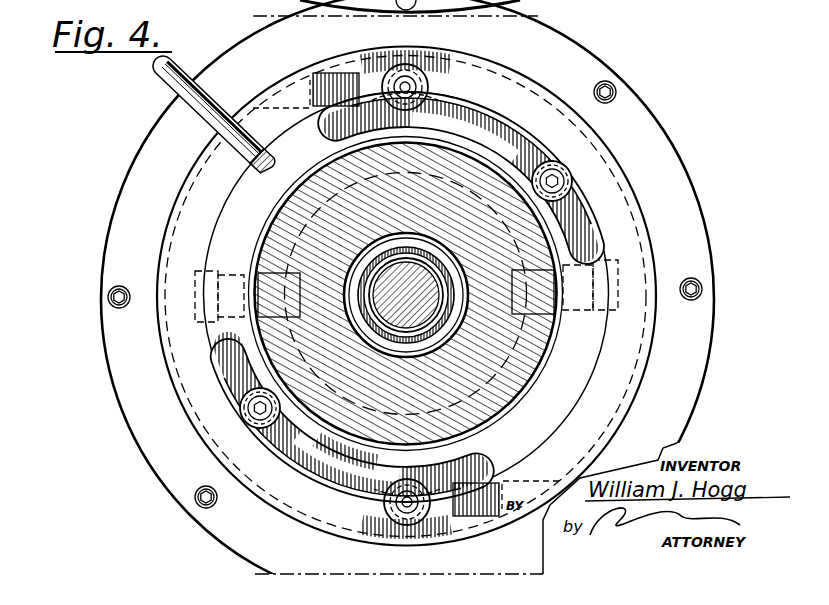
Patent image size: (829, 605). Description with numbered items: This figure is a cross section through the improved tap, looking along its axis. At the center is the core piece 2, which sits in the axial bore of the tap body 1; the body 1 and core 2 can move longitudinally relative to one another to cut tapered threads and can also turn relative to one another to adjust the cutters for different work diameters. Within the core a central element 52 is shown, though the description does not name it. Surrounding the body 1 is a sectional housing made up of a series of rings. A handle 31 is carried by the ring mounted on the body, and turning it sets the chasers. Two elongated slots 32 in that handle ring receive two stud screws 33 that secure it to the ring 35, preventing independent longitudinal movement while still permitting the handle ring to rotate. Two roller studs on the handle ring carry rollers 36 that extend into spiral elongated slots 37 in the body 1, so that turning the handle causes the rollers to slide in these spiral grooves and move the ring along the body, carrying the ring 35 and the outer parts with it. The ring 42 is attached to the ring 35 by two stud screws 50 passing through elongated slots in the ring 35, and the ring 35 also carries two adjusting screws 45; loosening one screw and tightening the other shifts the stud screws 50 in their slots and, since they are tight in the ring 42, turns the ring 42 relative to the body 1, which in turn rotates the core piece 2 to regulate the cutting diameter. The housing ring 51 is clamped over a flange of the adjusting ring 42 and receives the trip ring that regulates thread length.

The body 1 is at (513, 397).
The core piece 2 is at (406, 295).
The handle 31 is at (175, 79).
The elongated slot 32 is at (573, 207).
The stud screw 33 is at (556, 179).
The ring 35 is at (730, 383).
The roller 36 is at (263, 263).
The spiral elongated slot 37 is at (470, 184).
The ring 42 is at (432, 80).
The adjusting screw 45 is at (321, 79).
The stud screw 50 is at (283, 127).
The housing ring 51 is at (673, 185).
The shaft 52 is at (383, 324).